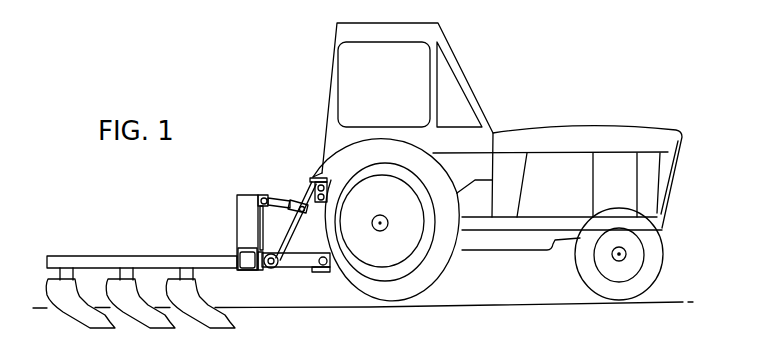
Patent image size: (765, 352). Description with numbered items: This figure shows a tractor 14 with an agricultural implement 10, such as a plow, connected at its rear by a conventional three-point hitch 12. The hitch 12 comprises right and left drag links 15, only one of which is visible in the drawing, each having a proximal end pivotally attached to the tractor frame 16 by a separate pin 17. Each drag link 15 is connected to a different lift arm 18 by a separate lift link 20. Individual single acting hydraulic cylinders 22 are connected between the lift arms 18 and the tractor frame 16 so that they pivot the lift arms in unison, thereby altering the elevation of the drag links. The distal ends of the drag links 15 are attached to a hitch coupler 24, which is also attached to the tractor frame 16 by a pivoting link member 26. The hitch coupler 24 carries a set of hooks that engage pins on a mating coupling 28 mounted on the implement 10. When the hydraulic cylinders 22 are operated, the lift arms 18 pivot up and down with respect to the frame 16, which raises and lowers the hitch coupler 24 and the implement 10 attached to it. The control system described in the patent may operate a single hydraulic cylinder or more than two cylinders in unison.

The implement 10 is at (145, 254).
The three-point hitch 12 is at (272, 173).
The tractor 14 is at (503, 135).
The drag link 15 is at (293, 268).
The tractor frame 16 is at (308, 213).
The pin 17 is at (322, 270).
The lift arm 18 is at (317, 170).
The lift link 20 is at (303, 198).
The hydraulic cylinder 22 is at (333, 198).
The hitch coupler 24 is at (237, 212).
The pivoting link member 26 is at (292, 207).
The mating coupling 28 is at (255, 222).